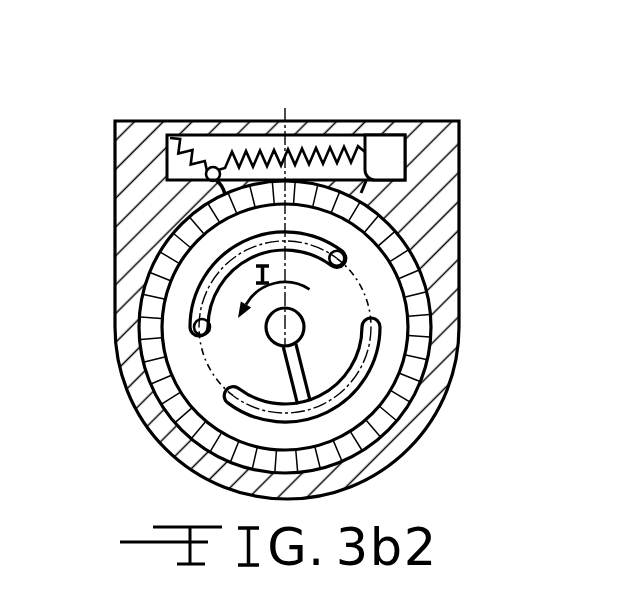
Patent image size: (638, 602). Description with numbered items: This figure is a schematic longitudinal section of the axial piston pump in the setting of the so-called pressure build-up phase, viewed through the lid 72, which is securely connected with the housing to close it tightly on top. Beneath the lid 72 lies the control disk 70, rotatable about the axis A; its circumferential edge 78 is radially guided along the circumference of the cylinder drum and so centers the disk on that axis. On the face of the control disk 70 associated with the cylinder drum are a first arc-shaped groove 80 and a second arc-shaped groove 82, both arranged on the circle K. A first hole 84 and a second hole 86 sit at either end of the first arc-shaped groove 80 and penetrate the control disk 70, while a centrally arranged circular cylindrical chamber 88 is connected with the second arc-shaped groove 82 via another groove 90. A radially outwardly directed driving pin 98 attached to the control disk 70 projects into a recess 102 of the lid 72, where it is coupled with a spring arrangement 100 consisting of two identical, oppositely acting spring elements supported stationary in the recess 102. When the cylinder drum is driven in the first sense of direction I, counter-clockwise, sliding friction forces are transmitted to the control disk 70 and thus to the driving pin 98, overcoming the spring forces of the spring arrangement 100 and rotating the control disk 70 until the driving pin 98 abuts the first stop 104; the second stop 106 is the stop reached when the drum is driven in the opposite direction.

The control disk 70 is at (370, 252).
The lid 72 is at (423, 170).
The circumferential edge 78 is at (410, 263).
The first arc-shaped groove 80 is at (246, 241).
The second arc-shaped groove 82 is at (255, 418).
The first hole 84 is at (196, 320).
The second hole 86 is at (290, 325).
The circular cylindrical chamber 88 is at (413, 322).
The groove 90 is at (293, 360).
The driving pin 98 is at (232, 158).
The spring arrangement 100 is at (182, 130).
The recess 102 is at (218, 160).
The first stop 104 is at (207, 172).
The second stop 106 is at (372, 170).